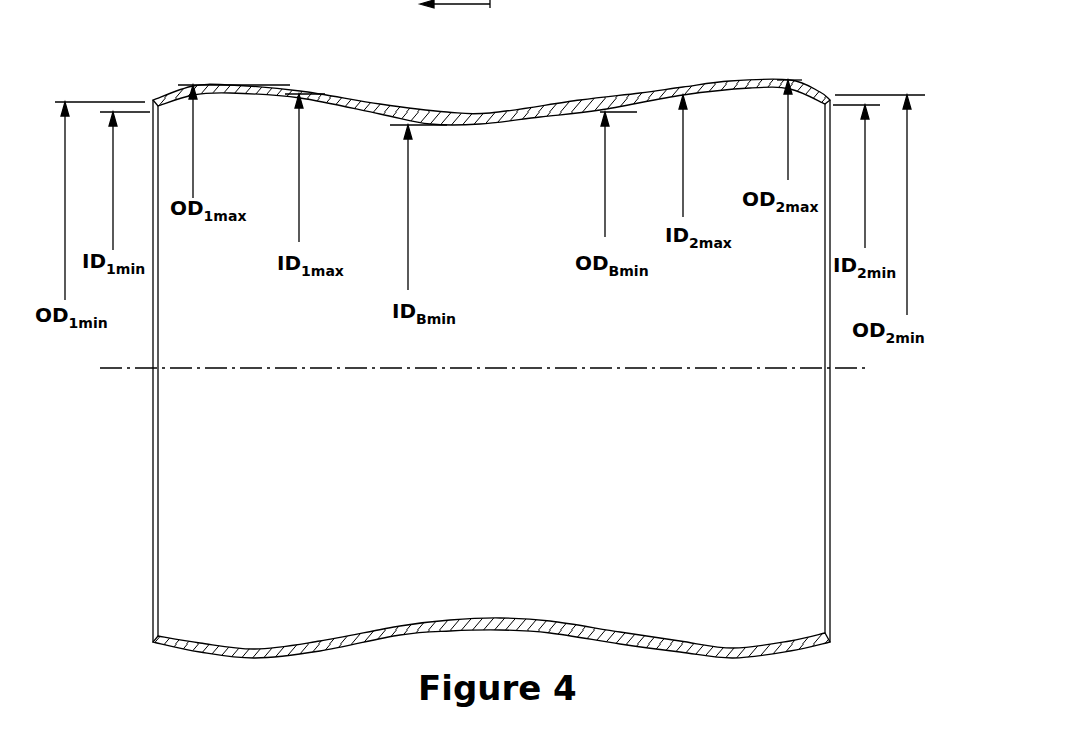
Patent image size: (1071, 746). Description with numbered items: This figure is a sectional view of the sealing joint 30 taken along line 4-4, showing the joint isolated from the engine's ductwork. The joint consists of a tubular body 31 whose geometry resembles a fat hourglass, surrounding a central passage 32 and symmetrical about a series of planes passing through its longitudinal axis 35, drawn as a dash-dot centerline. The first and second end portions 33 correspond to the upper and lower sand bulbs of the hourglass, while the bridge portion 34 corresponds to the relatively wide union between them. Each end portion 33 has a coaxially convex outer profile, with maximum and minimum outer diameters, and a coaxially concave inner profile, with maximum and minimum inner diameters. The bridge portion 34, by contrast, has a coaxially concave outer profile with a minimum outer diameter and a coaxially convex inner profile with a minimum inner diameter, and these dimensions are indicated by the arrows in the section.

The sealing joint 30 is at (490, 358).
The tubular body 31 is at (258, 80).
The passage 32 is at (512, 434).
The end portions 33 is at (255, 664).
The bridge portion 34 is at (500, 629).
The longitudinal axis 35 is at (850, 370).
The section line 4- 4 is at (445, 8).